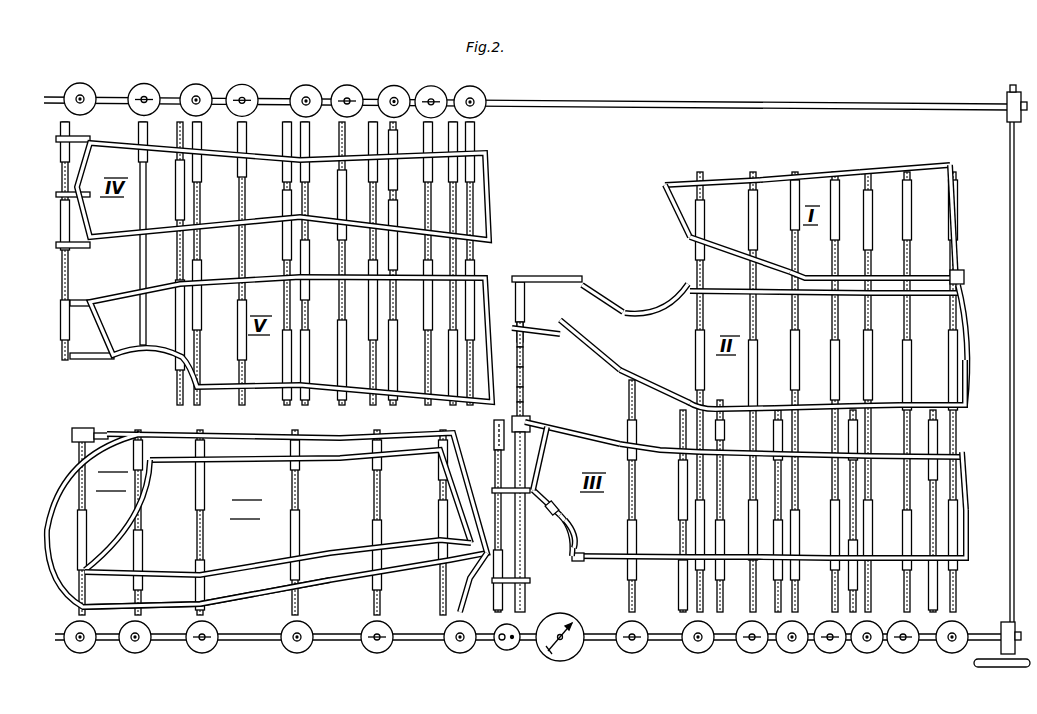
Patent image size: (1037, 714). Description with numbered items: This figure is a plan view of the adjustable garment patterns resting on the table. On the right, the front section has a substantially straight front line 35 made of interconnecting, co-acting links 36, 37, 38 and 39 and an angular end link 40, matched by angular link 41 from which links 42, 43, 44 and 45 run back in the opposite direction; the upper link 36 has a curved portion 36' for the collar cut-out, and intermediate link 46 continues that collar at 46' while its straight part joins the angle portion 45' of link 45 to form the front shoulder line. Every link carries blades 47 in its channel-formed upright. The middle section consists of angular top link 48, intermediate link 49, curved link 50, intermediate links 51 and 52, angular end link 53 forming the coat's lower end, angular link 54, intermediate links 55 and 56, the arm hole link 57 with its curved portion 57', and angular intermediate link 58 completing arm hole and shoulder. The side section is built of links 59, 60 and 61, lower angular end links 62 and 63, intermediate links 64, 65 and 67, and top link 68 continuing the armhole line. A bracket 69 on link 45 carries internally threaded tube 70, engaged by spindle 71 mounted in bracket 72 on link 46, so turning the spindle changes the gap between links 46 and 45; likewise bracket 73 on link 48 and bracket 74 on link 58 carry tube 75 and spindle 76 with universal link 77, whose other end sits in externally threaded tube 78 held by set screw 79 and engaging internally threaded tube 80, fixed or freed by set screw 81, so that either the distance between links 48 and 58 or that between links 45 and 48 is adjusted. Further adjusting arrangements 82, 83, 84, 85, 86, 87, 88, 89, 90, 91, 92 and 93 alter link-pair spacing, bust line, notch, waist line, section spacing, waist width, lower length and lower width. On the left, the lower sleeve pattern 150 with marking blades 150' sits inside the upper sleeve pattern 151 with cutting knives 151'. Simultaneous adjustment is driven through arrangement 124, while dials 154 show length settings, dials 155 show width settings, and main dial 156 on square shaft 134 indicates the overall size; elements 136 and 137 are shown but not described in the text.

The adjusting arrangement 124 is at (1005, 103).
The square shaft 134 is at (512, 101).
The foot 136 is at (980, 665).
The side bar 137 is at (1009, 150).
The dials 154 is at (462, 86).
The dials 155 is at (146, 84).
The main dial 156 is at (550, 658).
The lower sleeve pattern 150 is at (278, 510).
The marking blades 150' is at (278, 549).
The upper sleeve pattern 151 is at (267, 521).
The cutting knives 151' is at (206, 599).
The front line 35 is at (598, 562).
The upper link 36 is at (631, 543).
The curved portion 36' is at (586, 528).
The link 37 is at (734, 561).
The link 38 is at (826, 546).
The link 39 is at (895, 562).
The end link 40 is at (965, 560).
The link 41 is at (968, 466).
The link 42 is at (878, 454).
The link 43 is at (798, 459).
The link 44 is at (765, 458).
The link 45 is at (648, 455).
The angle portion 45' is at (557, 458).
The intermediate link 46 is at (551, 494).
The collar continuation 46' is at (551, 519).
The blades 47 is at (570, 562).
The top link 48 is at (578, 350).
The intermediate link 49 is at (668, 382).
The curved link 50 is at (730, 404).
The intermediate link 51 is at (806, 402).
The intermediate link 52 is at (878, 402).
The angular end link 53 is at (969, 400).
The angular link 54 is at (967, 302).
The intermediate link 55 is at (875, 298).
The intermediate link 56 is at (803, 298).
The arm hole link 57 is at (735, 306).
The curved portion 57' is at (656, 297).
The angular intermediate link 58 is at (590, 287).
The link 59 is at (730, 245).
The link 60 is at (805, 275).
The link 61 is at (880, 275).
The lower angular end link 62 is at (965, 274).
The lower angular end link 63 is at (957, 178).
The intermediate link 64 is at (905, 155).
The intermediate link 65 is at (810, 161).
The intermediate link 67 is at (728, 184).
The top link 68 is at (675, 214).
The bracket 69 is at (545, 425).
The internally threaded tube 70 is at (492, 424).
The threaded spindle 71 is at (494, 464).
The bracket 72 is at (494, 492).
The bracket 73 is at (545, 337).
The bracket 74 is at (538, 277).
The tube 75 is at (518, 290).
The spindle 76 is at (524, 328).
The universal link 77 is at (516, 346).
The tube 78 is at (524, 390).
The set screw 79 is at (516, 372).
The internally threaded tube 80 is at (510, 420).
The set screw 81 is at (530, 418).
The adjusting arrangement 82 is at (636, 596).
The adjusting arrangement 83 is at (696, 358).
The adjusting arrangement 84 is at (718, 500).
The adjusting arrangement 85 is at (750, 608).
The adjusting arrangement 86 is at (782, 595).
The adjusting arrangement 87 is at (799, 520).
The adjusting arrangement 88 is at (832, 352).
The adjusting arrangement 89 is at (872, 524).
The spindle arrangement 90 is at (850, 428).
The width arrangement 91 is at (909, 352).
The width arrangement 92 is at (950, 320).
The distancing arrangement 93 is at (935, 534).